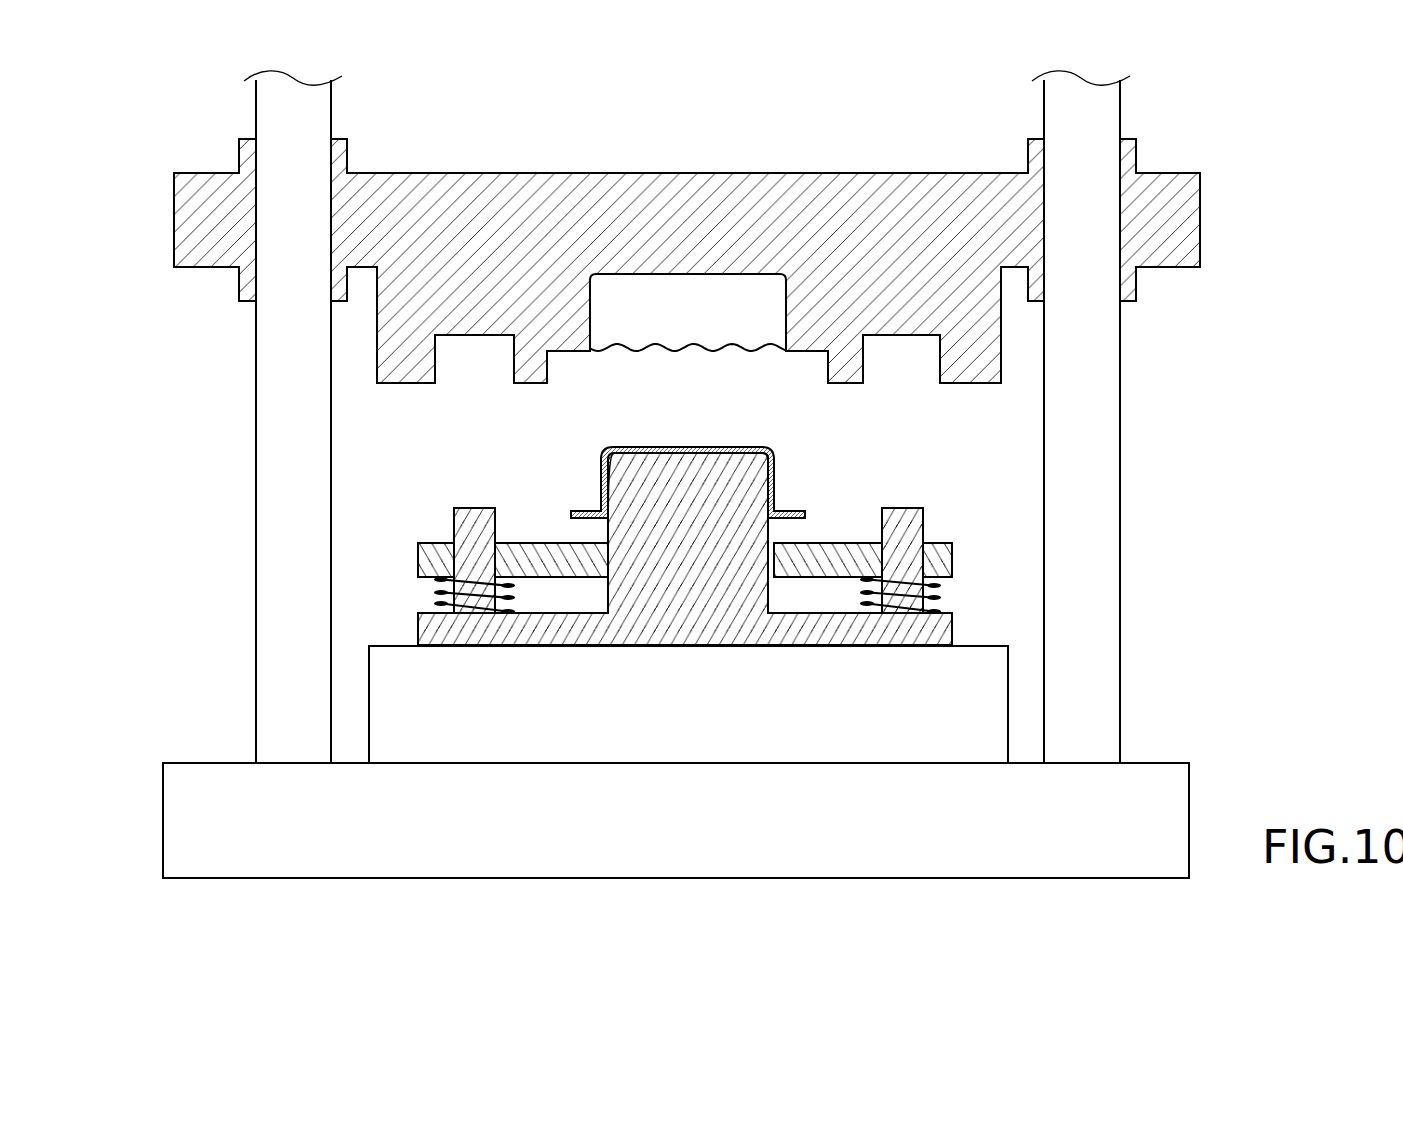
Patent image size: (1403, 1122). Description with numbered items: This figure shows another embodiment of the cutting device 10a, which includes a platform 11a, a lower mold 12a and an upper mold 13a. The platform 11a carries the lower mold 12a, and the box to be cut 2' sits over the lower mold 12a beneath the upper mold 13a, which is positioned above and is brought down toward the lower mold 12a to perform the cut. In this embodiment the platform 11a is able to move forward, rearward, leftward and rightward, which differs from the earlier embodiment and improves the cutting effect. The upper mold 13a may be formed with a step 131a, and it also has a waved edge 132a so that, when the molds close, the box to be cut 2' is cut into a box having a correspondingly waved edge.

The cutting device 10a is at (877, 168).
The upper mold 13a is at (455, 190).
The step 131a is at (567, 353).
The waved edge 132a is at (683, 352).
The box to be cut 2' is at (723, 482).
The lower mold 12a is at (750, 592).
The platform 11a is at (953, 696).